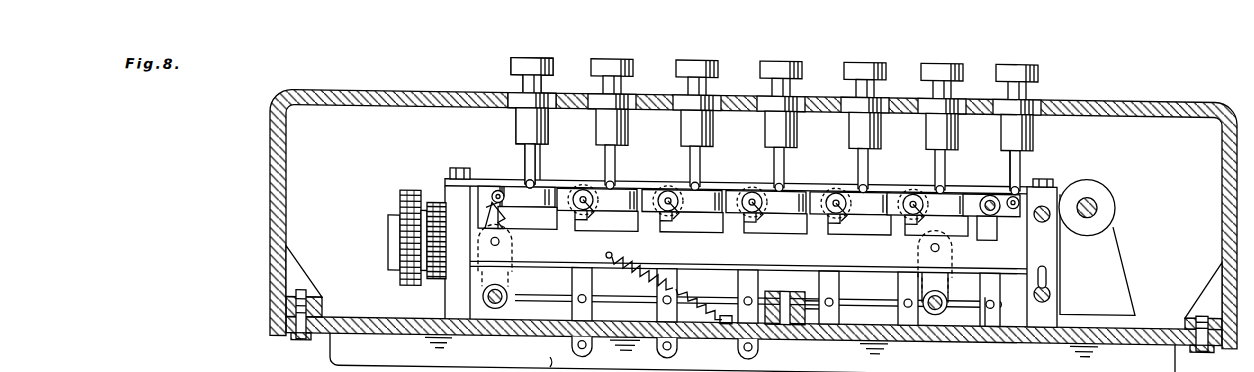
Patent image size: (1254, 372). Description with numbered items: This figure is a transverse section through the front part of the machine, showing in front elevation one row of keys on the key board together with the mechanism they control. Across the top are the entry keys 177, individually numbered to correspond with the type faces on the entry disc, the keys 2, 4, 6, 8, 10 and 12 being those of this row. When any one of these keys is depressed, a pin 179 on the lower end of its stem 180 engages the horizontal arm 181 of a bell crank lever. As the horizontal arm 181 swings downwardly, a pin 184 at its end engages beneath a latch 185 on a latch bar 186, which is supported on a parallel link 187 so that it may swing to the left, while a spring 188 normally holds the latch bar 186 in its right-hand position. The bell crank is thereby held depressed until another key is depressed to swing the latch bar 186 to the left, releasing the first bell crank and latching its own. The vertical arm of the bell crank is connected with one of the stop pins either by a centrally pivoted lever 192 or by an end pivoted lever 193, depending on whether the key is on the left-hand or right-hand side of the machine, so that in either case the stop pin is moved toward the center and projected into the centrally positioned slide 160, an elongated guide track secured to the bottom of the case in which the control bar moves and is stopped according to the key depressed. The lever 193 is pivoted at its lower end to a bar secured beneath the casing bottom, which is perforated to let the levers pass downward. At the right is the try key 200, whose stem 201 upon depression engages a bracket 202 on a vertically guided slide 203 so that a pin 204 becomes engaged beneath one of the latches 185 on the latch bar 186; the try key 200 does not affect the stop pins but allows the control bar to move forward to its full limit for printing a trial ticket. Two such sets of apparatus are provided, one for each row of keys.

The entry key 2 is at (540, 58).
The entry key 4 is at (619, 57).
The entry key 6 is at (704, 55).
The entry key 8 is at (786, 54).
The entry key 10 is at (876, 53).
The entry key 12 is at (956, 51).
The entry keys 177 is at (503, 70).
The pin 179 is at (533, 188).
The stem 180 is at (542, 183).
The horizontal arm 181 is at (506, 191).
The pin 184 is at (497, 201).
The latch 185 is at (485, 210).
The latch bar 186 is at (776, 258).
The parallel link 187 is at (500, 281).
The spring 188 is at (672, 297).
The centrally pivoted lever 192 is at (997, 292).
The end pivoted lever 193 is at (585, 289).
The slide 160 is at (777, 332).
The try key 200 is at (1038, 66).
The stem 201 is at (1020, 159).
The bracket 202 is at (1050, 188).
The vertically guided slide 203 is at (1045, 253).
The pin 204 is at (1012, 194).